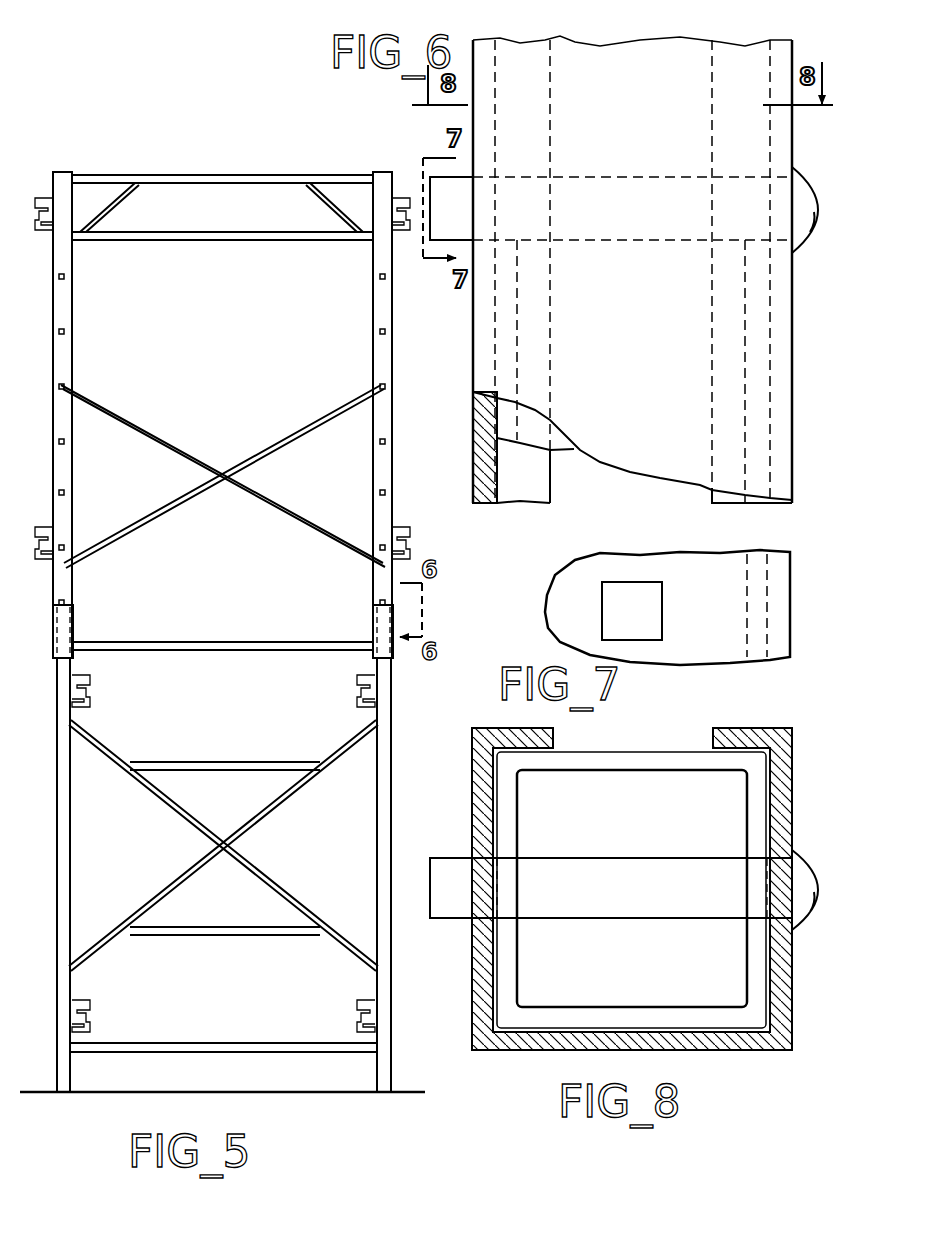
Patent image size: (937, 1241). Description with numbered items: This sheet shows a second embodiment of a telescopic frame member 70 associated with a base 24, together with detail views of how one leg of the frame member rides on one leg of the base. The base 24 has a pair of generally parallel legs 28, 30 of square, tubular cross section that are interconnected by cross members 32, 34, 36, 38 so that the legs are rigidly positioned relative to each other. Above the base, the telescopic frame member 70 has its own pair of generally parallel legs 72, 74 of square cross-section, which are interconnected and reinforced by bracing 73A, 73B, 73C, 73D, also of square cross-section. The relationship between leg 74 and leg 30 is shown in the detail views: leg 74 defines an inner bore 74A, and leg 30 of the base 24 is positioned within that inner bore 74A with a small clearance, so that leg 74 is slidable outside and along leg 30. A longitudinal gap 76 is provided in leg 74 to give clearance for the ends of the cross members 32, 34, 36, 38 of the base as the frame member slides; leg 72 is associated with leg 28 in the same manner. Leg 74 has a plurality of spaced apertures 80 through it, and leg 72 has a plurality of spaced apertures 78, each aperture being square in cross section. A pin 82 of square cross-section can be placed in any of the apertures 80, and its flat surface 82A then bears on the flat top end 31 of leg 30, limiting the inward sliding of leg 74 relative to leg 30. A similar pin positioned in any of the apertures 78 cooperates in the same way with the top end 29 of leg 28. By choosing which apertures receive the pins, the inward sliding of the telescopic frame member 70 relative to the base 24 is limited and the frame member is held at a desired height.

In FIG. 5, the base 24 is at (75, 838).
In FIG. 5, the leg 28 is at (72, 889).
In FIG. 5, the top end 29 is at (60, 636).
In FIG. 5, the leg 30 is at (392, 870).
In FIG. 6, the leg 30 is at (517, 345).
In FIG. 7, the leg 30 is at (755, 650).
In FIG. 8, the leg 30 is at (518, 990).
In FIG. 5, the flat top end 31 is at (380, 626).
In FIG. 5, the cross member 32 is at (320, 654).
In FIG. 5, the cross member 34 is at (338, 766).
In FIG. 5, the cross member 36 is at (352, 936).
In FIG. 5, the cross member 38 is at (312, 1043).
In FIG. 5, the telescopic frame member 70 is at (74, 340).
In FIG. 5, the leg 72 is at (73, 384).
In FIG. 5, the bracing 73A is at (165, 175).
In FIG. 5, the bracing 73B is at (236, 234).
In FIG. 5, the bracing 73C is at (112, 210).
In FIG. 5, the bracing 73D is at (331, 206).
In FIG. 5, the leg 74 is at (374, 362).
In FIG. 6, the leg 74 is at (645, 269).
In FIG. 7, the leg 74 is at (714, 662).
In FIG. 8, the leg 74 is at (472, 767).
In FIG. 8, the inner bore 74A is at (495, 818).
In FIG. 6, the longitudinal gap 76 is at (668, 484).
In FIG. 8, the longitudinal gap 76 is at (642, 745).
In FIG. 5, the apertures 78 is at (65, 443).
In FIG. 5, the apertures 80 is at (386, 443).
In FIG. 7, the apertures 80 is at (633, 582).
In FIG. 5, the pin 82 is at (376, 598).
In FIG. 6, the pin 82 is at (455, 252).
In FIG. 7, the pin 82 is at (650, 630).
In FIG. 8, the pin 82 is at (463, 912).
In FIG. 6, the flat surface 82A is at (660, 242).